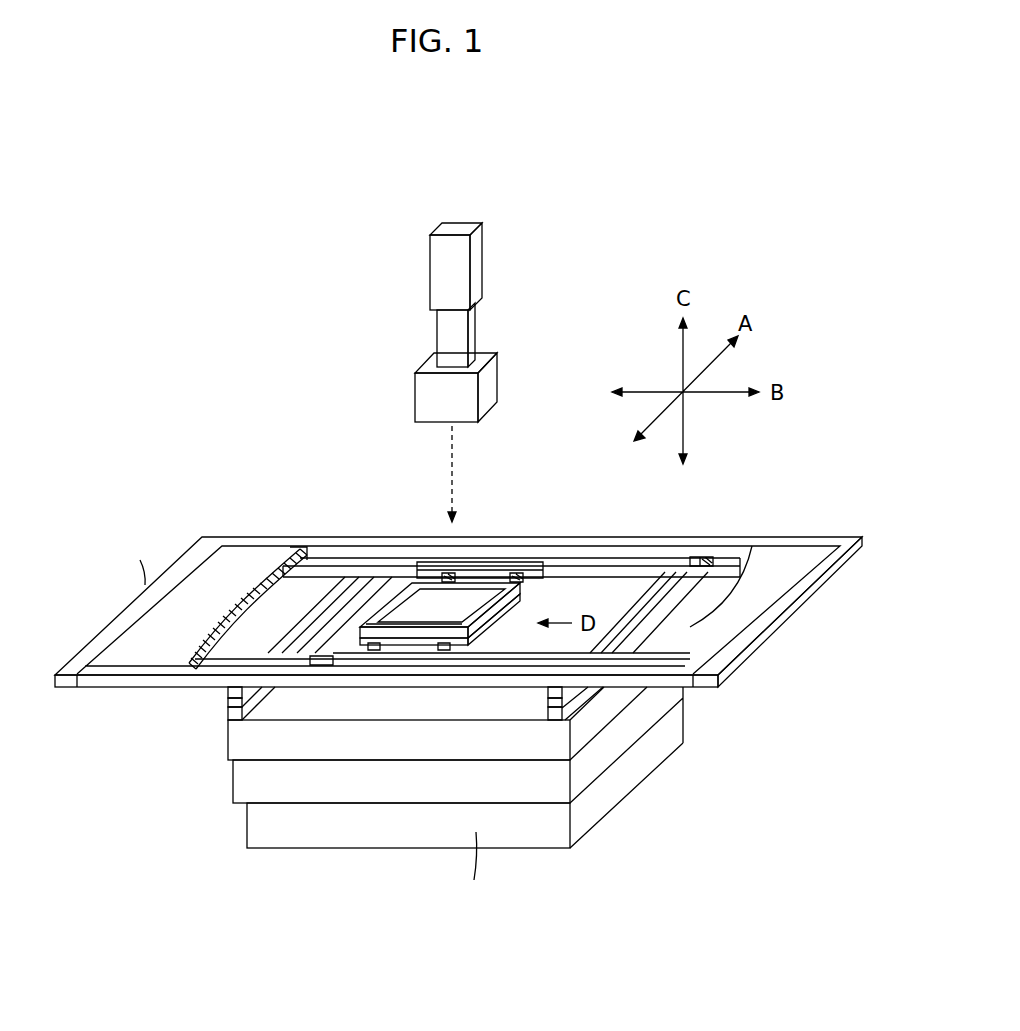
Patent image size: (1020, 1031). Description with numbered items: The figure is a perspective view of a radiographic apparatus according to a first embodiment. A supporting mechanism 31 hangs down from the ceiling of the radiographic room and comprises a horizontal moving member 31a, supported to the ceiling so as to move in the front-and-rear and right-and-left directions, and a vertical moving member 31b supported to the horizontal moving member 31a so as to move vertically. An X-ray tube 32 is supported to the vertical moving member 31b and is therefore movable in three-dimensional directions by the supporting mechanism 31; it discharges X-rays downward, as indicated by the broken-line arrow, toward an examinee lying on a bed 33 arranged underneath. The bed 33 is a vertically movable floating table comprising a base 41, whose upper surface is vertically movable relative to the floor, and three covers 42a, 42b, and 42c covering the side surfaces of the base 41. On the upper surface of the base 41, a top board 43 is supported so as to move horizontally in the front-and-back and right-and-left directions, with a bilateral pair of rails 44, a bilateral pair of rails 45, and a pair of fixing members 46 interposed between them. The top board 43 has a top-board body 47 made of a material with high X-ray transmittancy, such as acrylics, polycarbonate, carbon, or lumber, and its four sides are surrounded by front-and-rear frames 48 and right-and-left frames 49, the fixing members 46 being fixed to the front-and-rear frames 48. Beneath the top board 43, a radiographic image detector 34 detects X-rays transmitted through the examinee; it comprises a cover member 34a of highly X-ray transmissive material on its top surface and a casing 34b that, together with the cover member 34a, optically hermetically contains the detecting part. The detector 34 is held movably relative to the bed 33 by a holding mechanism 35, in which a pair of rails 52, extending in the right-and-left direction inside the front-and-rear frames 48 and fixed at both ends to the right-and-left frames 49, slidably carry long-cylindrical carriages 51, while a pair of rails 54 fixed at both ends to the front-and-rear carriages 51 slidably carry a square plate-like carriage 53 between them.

The supporting mechanism 31 is at (489, 294).
The horizontal moving member 31a is at (486, 243).
The vertical moving member 31b is at (478, 328).
The X-ray tube 32 is at (497, 377).
The bed 33 is at (736, 738).
The radiographic image detector 34 is at (450, 557).
The cover member 34a is at (468, 594).
The casing 34b is at (496, 595).
The holding mechanism 35 is at (537, 548).
The base 41 is at (507, 698).
The cover 42a is at (479, 867).
The cover 42b is at (408, 790).
The cover 42c is at (337, 752).
The top board 43 is at (203, 528).
The rails 44 is at (228, 715).
The rails 45 is at (228, 702).
The fixing members 46 is at (228, 693).
The top-board body 47 is at (234, 556).
The front-and-rear frames 48 is at (283, 556).
The right-and-left frames 49 is at (807, 643).
The carriages 51 is at (344, 655).
The rails 52 is at (722, 560).
The carriage 53 is at (514, 612).
The rails 54 is at (447, 573).